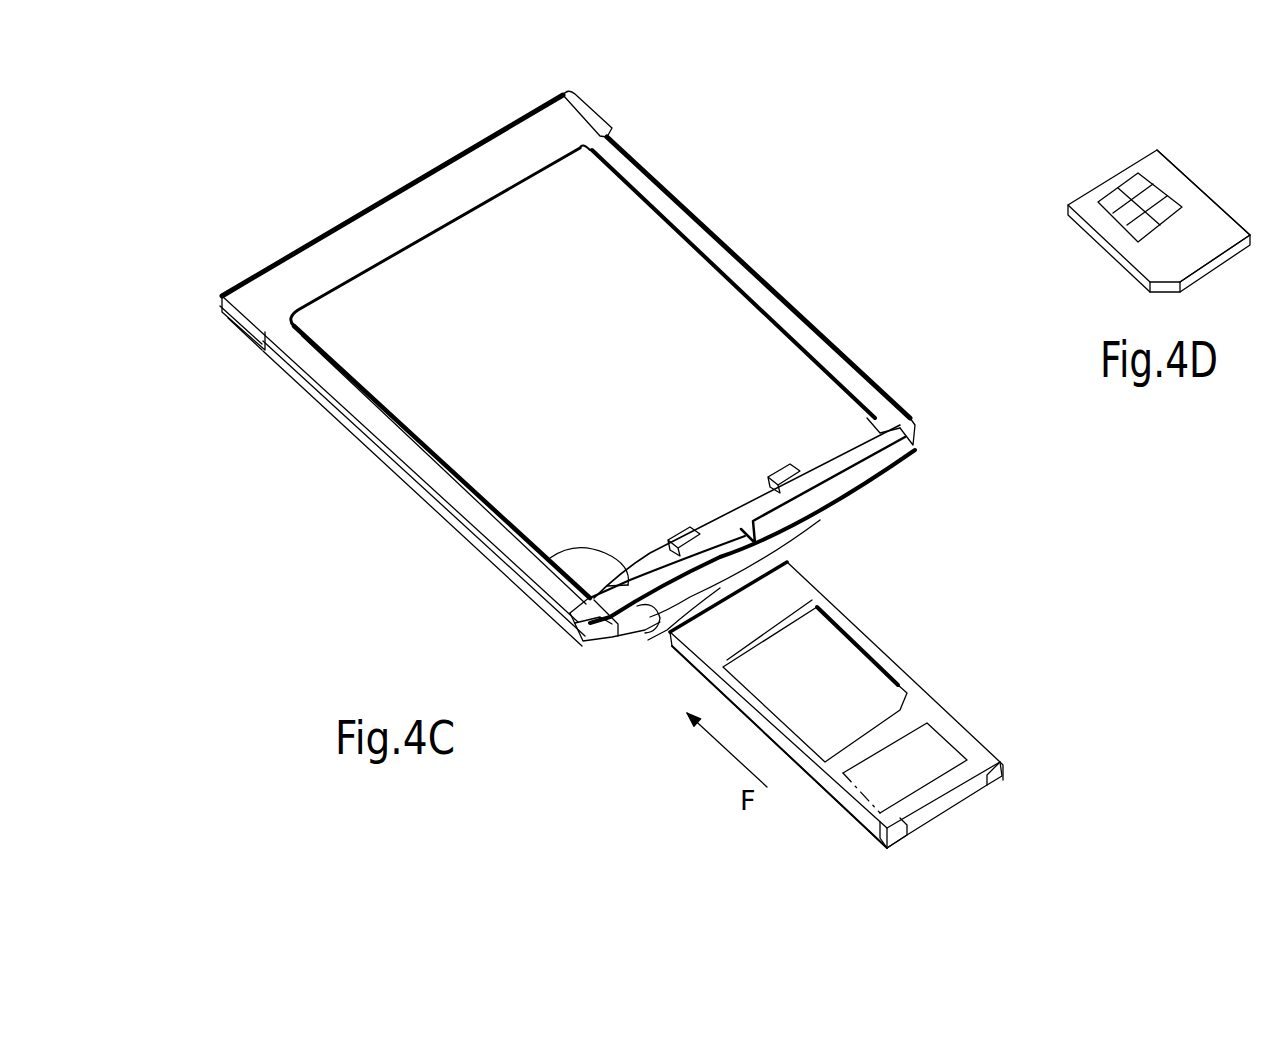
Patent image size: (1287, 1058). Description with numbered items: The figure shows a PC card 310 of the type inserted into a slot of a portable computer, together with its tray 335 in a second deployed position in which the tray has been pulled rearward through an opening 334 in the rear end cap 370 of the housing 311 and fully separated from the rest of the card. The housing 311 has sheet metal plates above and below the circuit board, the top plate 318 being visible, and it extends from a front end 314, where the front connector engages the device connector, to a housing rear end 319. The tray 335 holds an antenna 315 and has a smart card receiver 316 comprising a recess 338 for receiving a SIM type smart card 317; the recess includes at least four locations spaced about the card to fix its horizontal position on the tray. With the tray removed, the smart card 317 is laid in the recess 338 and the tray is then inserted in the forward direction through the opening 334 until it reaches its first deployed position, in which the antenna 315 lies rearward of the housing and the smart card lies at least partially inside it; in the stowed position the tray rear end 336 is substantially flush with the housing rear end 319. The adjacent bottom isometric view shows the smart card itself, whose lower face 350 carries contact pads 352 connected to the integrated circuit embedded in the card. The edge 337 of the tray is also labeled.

In FIG. 4C, the PC card 310 is at (840, 222).
In FIG. 4C, the housing 311 is at (718, 227).
In FIG. 4C, the front end 314 is at (385, 197).
In FIG. 4C, the antenna 315 is at (930, 760).
In FIG. 4C, the smart card receiver 316 is at (847, 620).
In FIG. 4C, the smart card 317 is at (870, 707).
In FIG. 4D, the smart card 317 is at (1153, 138).
In FIG. 4C, the top plate 318 is at (765, 365).
In FIG. 4C, the housing rear end 319 is at (862, 453).
In FIG. 4C, the opening 334 is at (640, 607).
In FIG. 4C, the tray 335 is at (830, 803).
In FIG. 4C, the tray rear end 336 is at (890, 832).
In FIG. 4C, the holder top edge 337 is at (782, 597).
In FIG. 4C, the recess 338 is at (852, 652).
In FIG. 4D, the lower face 350 is at (1207, 210).
In FIG. 4D, the contact pads 352 is at (1122, 186).
In FIG. 4C, the rear end cap 370 is at (550, 567).